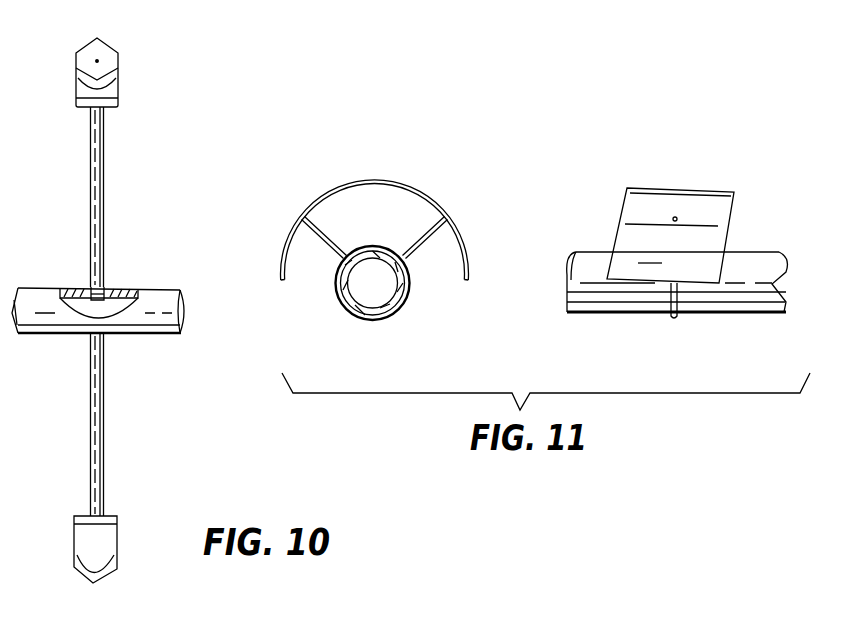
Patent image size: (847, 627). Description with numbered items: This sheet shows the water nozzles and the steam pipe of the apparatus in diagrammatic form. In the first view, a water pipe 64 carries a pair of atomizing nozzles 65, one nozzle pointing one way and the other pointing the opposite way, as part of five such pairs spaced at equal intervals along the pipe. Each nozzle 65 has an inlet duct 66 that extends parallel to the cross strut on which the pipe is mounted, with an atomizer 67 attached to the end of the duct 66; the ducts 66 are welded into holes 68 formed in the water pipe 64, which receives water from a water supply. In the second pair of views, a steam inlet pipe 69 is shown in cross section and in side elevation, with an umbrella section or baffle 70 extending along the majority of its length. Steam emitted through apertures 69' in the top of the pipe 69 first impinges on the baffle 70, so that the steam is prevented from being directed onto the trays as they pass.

In FIG. 10, the water pipe 64 is at (157, 336).
In FIG. 10, the atomizing nozzle 65 is at (162, 238).
In FIG. 10, the inlet duct 66 is at (101, 215).
In FIG. 10, the atomizer 67 is at (114, 62).
In FIG. 10, the hole 68 is at (101, 287).
In FIG. 11, the steam inlet pipe 69 is at (562, 309).
In FIG. 11, the aperture 69' is at (378, 261).
In FIG. 11, the umbrella section or baffle 70 is at (303, 220).